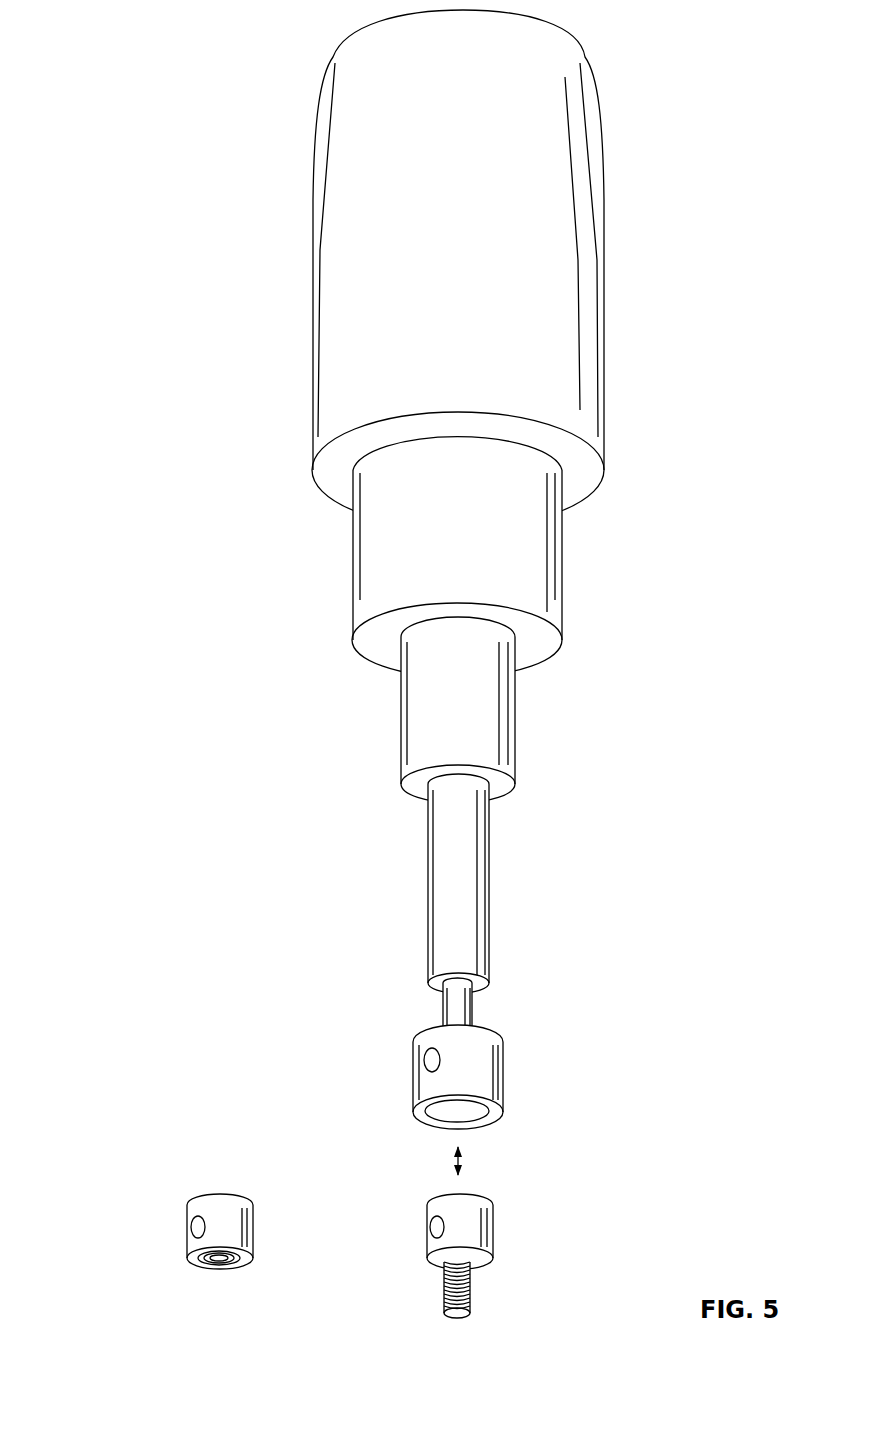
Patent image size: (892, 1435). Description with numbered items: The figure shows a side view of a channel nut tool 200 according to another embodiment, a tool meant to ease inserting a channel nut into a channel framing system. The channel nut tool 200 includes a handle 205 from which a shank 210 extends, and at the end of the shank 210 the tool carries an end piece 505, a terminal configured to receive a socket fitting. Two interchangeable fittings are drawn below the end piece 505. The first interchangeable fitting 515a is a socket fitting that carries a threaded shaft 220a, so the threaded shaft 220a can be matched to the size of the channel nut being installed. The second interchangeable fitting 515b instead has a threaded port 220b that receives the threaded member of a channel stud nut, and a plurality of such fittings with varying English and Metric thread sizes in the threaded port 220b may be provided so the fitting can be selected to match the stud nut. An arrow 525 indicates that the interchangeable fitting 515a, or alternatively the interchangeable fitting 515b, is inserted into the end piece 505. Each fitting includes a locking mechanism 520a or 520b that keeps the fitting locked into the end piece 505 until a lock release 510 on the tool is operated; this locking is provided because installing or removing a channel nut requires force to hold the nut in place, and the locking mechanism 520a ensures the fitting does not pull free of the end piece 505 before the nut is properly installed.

The channel nut tool 200 is at (358, 498).
The handle 205 is at (328, 254).
The shank 210 is at (200, 616).
The end piece 505 is at (397, 1007).
The lock release 510 is at (383, 1066).
The arrow 525 is at (462, 1162).
The interchangeable fitting 515a is at (451, 1256).
The locking mechanism 520a is at (427, 1224).
The threaded shaft 220a is at (472, 1284).
The interchangeable fitting 515b is at (216, 1244).
The locking mechanism 520b is at (190, 1229).
The threaded port 220b is at (230, 1262).